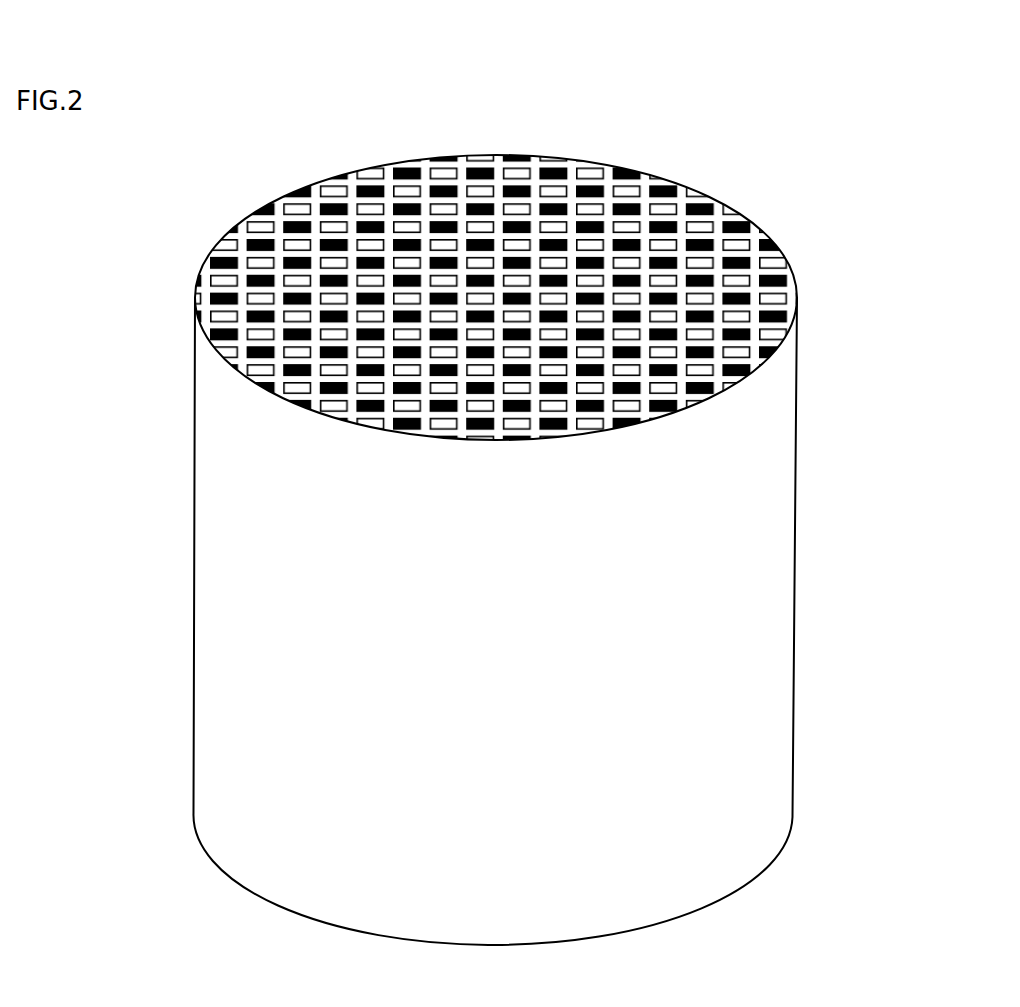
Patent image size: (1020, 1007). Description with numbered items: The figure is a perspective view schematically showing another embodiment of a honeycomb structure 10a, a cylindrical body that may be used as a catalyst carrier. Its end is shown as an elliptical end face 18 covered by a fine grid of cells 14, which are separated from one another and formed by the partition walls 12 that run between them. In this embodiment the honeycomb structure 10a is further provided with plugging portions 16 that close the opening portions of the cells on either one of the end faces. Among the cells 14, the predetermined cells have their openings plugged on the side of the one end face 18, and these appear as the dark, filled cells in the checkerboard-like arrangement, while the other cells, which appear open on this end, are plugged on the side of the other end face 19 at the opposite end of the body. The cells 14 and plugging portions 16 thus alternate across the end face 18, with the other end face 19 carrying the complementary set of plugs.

The honeycomb structure 10a is at (628, 103).
The partition walls 12 is at (280, 363).
The cells 14 is at (342, 202).
The plugging portions 16 is at (715, 280).
The one end face 18 is at (285, 186).
The other end face 19 is at (237, 885).